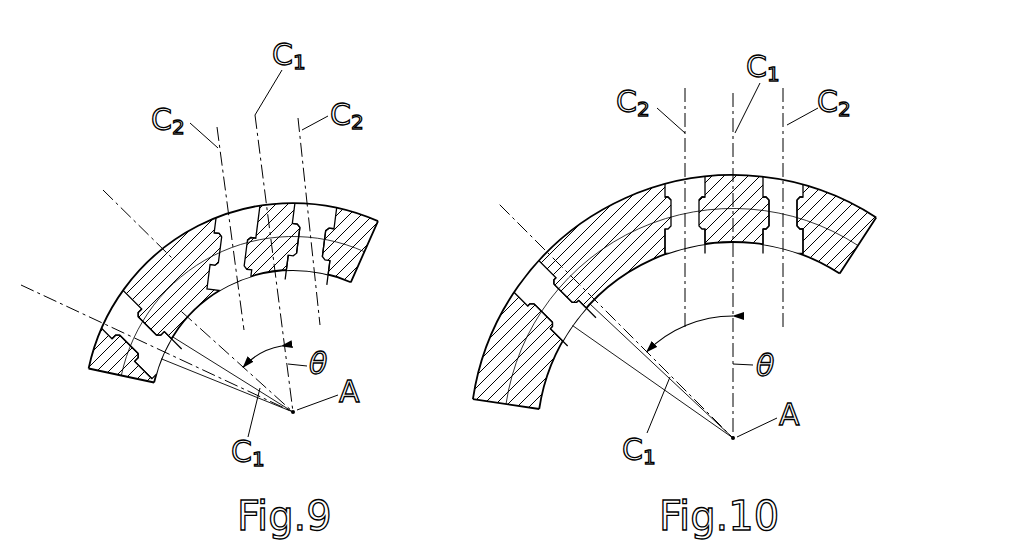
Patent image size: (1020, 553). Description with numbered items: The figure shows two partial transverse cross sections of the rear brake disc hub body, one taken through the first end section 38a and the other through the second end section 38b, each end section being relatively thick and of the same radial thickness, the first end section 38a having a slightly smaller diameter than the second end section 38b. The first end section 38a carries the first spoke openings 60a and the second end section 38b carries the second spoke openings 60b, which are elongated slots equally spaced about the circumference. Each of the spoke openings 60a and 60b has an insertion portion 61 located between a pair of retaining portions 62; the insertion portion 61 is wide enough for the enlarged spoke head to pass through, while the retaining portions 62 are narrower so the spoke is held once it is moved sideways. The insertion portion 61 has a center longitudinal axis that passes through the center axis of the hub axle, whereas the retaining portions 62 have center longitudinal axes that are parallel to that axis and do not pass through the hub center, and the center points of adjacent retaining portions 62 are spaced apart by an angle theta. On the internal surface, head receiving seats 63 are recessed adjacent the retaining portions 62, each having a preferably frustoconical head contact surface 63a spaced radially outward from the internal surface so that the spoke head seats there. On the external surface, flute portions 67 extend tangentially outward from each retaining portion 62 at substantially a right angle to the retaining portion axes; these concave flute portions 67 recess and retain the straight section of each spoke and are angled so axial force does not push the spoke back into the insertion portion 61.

In FIG. 9, the first end section 38a is at (379, 236).
In FIG. 10, the second end section 38b is at (866, 208).
In FIG. 9, the first spoke openings 60a is at (311, 202).
In FIG. 10, the second spoke openings 60b is at (661, 184).
In FIG. 9, the insertion portion 61 is at (281, 258).
In FIG. 10, the insertion portion 61 is at (543, 265).
In FIG. 9, the retaining portions 62 is at (316, 248).
In FIG. 10, the retaining portions 62 is at (789, 203).
In FIG. 9, the head receiving seats 63 is at (327, 270).
In FIG. 10, the head receiving seats 63 is at (672, 247).
In FIG. 9, the head contact surface 63a is at (158, 369).
In FIG. 10, the head contact surface 63a is at (797, 258).
In FIG. 9, the flute portions 67 is at (319, 209).
In FIG. 10, the flute portions 67 is at (625, 226).